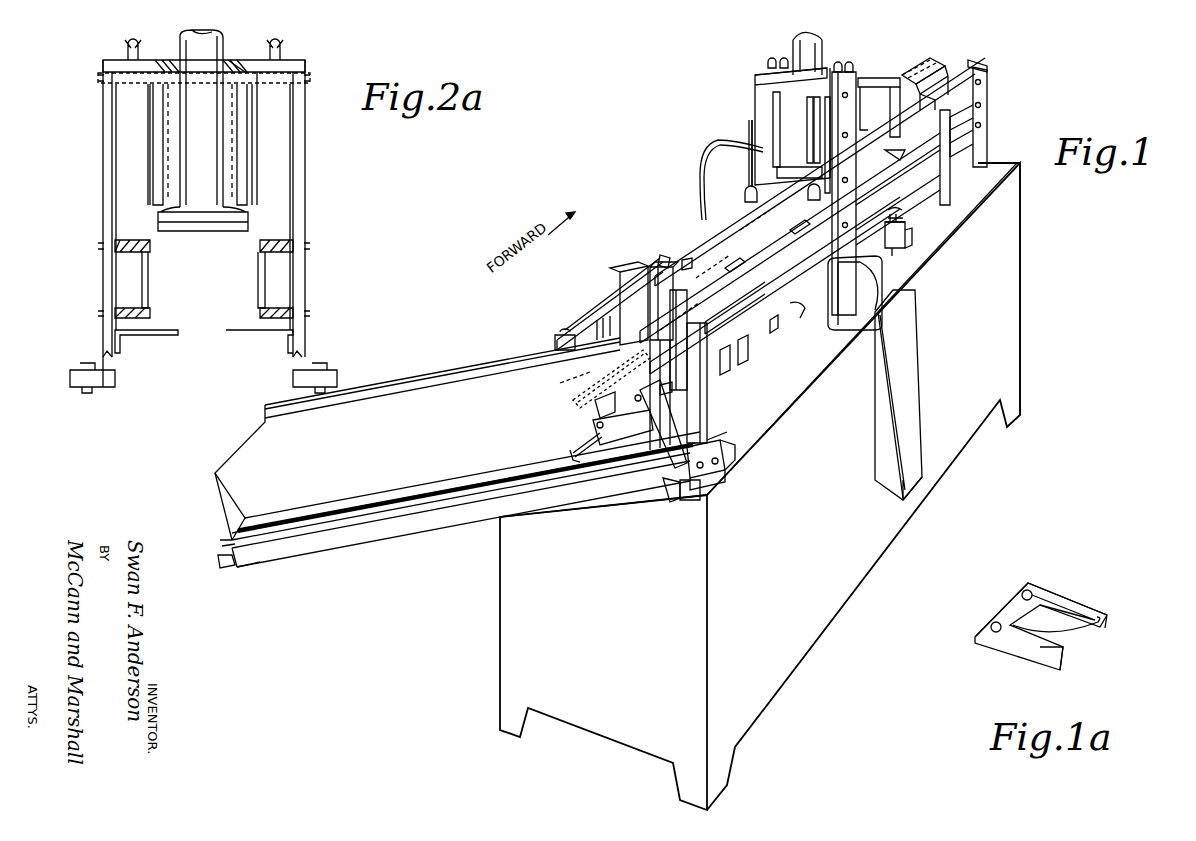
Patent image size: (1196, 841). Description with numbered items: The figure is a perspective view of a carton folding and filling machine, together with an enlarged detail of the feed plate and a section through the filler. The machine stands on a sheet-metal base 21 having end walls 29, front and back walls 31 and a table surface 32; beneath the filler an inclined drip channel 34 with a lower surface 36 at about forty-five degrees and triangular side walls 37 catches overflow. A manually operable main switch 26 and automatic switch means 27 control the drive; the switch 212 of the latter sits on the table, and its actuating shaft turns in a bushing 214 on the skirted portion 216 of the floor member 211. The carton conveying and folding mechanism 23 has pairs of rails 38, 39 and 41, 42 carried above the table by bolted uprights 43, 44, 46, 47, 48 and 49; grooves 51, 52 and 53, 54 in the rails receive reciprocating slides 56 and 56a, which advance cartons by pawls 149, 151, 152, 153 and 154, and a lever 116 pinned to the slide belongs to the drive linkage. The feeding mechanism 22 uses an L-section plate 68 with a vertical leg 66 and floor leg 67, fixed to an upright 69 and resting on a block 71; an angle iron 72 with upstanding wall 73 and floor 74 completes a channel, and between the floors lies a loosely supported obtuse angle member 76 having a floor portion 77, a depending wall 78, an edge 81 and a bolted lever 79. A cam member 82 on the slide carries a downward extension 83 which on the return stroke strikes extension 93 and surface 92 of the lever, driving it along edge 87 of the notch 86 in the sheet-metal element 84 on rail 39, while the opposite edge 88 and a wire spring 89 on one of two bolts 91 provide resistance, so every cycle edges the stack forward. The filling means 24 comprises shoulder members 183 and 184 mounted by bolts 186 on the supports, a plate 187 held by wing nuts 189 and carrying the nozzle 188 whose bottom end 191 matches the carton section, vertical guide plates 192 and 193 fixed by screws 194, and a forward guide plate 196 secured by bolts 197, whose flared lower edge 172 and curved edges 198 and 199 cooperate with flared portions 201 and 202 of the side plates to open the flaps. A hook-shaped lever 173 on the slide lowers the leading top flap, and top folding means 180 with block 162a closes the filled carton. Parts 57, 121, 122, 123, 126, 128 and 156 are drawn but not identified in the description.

In FIG. 1, the base member 21 is at (790, 622).
In FIG. 1, the feeding mechanism 22 is at (578, 385).
In FIG. 1, the carton conveying and folding mechanism 23 is at (688, 253).
In FIG. 1, the filling means 24 is at (772, 100).
In FIG. 1, the main switch 26 is at (840, 322).
In FIG. 1, the switch means 27 is at (905, 236).
In FIG. 1, the end walls 29 is at (580, 612).
In FIG. 1, the front and back walls 31 is at (1005, 324).
In FIG. 1, the table surface 32 is at (810, 370).
In FIG. 1, the inclined channel 34 is at (895, 395).
In FIG. 1, the lower surface 36 is at (903, 475).
In FIG. 1, the triangular side walls 37 is at (908, 360).
In FIG. 1, the rail 38 is at (618, 375).
In FIG. 1, the rail 39 is at (590, 438).
In FIG. 1, the rail 41 is at (930, 58).
In FIG. 1, the rail 42 is at (928, 92).
In FIG. 1, the upright 43 is at (707, 395).
In FIG. 1, the upright 44 is at (590, 298).
In FIG. 1, the upright 46 is at (987, 90).
In FIG. 1, the upright 47 is at (946, 66).
In FIG. 2a, the upright 48 is at (305, 133).
In FIG. 1, the upright 48 is at (862, 76).
In FIG. 2a, the upright 49 is at (103, 136).
In FIG. 1, the upright 49 is at (760, 80).
In FIG. 1, the groove 51 is at (580, 385).
In FIG. 1, the groove 52 is at (573, 450).
In FIG. 1, the groove 53 is at (905, 70).
In FIG. 1, the groove 54 is at (965, 68).
In FIG. 2a, the slide member 56 is at (265, 284).
In FIG. 1, the slide member 56 is at (740, 305).
In FIG. 2a, the slide member 56a is at (142, 286).
In FIG. 1, the slide member 56a is at (700, 258).
In FIG. 1, the side plate 57 is at (900, 165).
In FIG. 1, the vertical leg 66 is at (403, 385).
In FIG. 1, the horizontal leg 67 is at (382, 495).
In FIG. 1, the L cross-section plate 68 is at (240, 446).
In FIG. 1, the upright 69 is at (632, 265).
In FIG. 1, the supporting block 71 is at (672, 493).
In FIG. 1, the angle iron 72 is at (272, 568).
In FIG. 1, the upstanding wall 73 is at (322, 540).
In FIG. 1, the floor portion 74 is at (218, 562).
In FIG. 1, the obtuse angle member 76 is at (222, 544).
In FIG. 1, the floor portion 77 is at (724, 445).
In FIG. 1, the depending wall 78 is at (725, 470).
In FIG. 1, the lever member 79 is at (691, 495).
In FIG. 1, the edge 81 is at (710, 440).
In FIG. 1, the cam member 82 is at (595, 410).
In FIG. 1, the downwardly extending portion 83 is at (622, 418).
In FIG. 1, the flat sheet metal element 84 is at (638, 388).
In FIG. 1a, the flat sheet metal element 84 is at (995, 600).
In FIG. 1a, the notch 86 is at (1080, 642).
In FIG. 1a, the edge 87 is at (1040, 655).
In FIG. 1a, the edge 88 is at (1080, 617).
In FIG. 1a, the wire spring 89 is at (1058, 603).
In FIG. 1a, the mounting bolts 91 is at (1026, 590).
In FIG. 1, the surface 92 is at (672, 385).
In FIG. 1, the extension 93 is at (638, 395).
In FIG. 1, the lever 116 is at (950, 178).
In FIG. 1, the pivot pin 121 is at (596, 424).
In FIG. 1, the upright post 122 is at (658, 265).
In FIG. 1, the rail end bracket 123 is at (597, 330).
In FIG. 1, the clamp 126 is at (692, 268).
In FIG. 1, the rail 128 is at (612, 278).
In FIG. 1, the pawls 149 is at (700, 358).
In FIG. 1, the pawls 151 is at (758, 350).
In FIG. 1, the pawls 152 is at (760, 255).
In FIG. 1, the pawls 153 is at (816, 200).
In FIG. 1, the pawls 154 is at (898, 177).
In FIG. 1, the slats 156 is at (975, 115).
In FIG. 1, the block 162a is at (885, 155).
In FIG. 1, the lower edge portion 172 is at (777, 170).
In FIG. 1, the hook-shaped lever 173 is at (704, 168).
In FIG. 1, the top folding means 180 is at (882, 72).
In FIG. 2a, the shoulder member 183 is at (280, 84).
In FIG. 2a, the shoulder member 184 is at (125, 84).
In FIG. 2a, the bolts 186 is at (98, 78).
In FIG. 2a, the plate 187 is at (258, 50).
In FIG. 2a, the filling nozzle 188 is at (201, 118).
In FIG. 1, the filling nozzle 188 is at (807, 53).
In FIG. 2a, the wing nuts 189 is at (128, 52).
In FIG. 1, the wing nuts 189 is at (774, 60).
In FIG. 2a, the bottom end portion 191 is at (223, 222).
In FIG. 2a, the vertical guide plate 192 is at (258, 145).
In FIG. 2a, the vertical guide plate 193 is at (153, 172).
In FIG. 2a, the screws 194 is at (152, 248).
In FIG. 2a, the forward guide plate 196 is at (243, 138).
In FIG. 1, the forward guide plate 196 is at (778, 112).
In FIG. 1, the bolts 197 is at (840, 68).
In FIG. 2a, the vertical edge 198 is at (168, 150).
In FIG. 1, the vertical edge 198 is at (814, 153).
In FIG. 2a, the vertical edge 199 is at (243, 182).
In FIG. 1, the vertical edge 199 is at (808, 130).
In FIG. 2a, the flared vertical edge portion 201 is at (125, 115).
In FIG. 1, the flared vertical edge portion 201 is at (830, 140).
In FIG. 2a, the flared vertical edge portion 202 is at (272, 155).
In FIG. 1, the flared vertical edge portion 202 is at (760, 132).
In FIG. 1, the floor 211 is at (780, 329).
In FIG. 1, the switch 212 is at (912, 232).
In FIG. 1, the bushing 214 is at (903, 211).
In FIG. 1, the skirted portion 216 is at (790, 305).